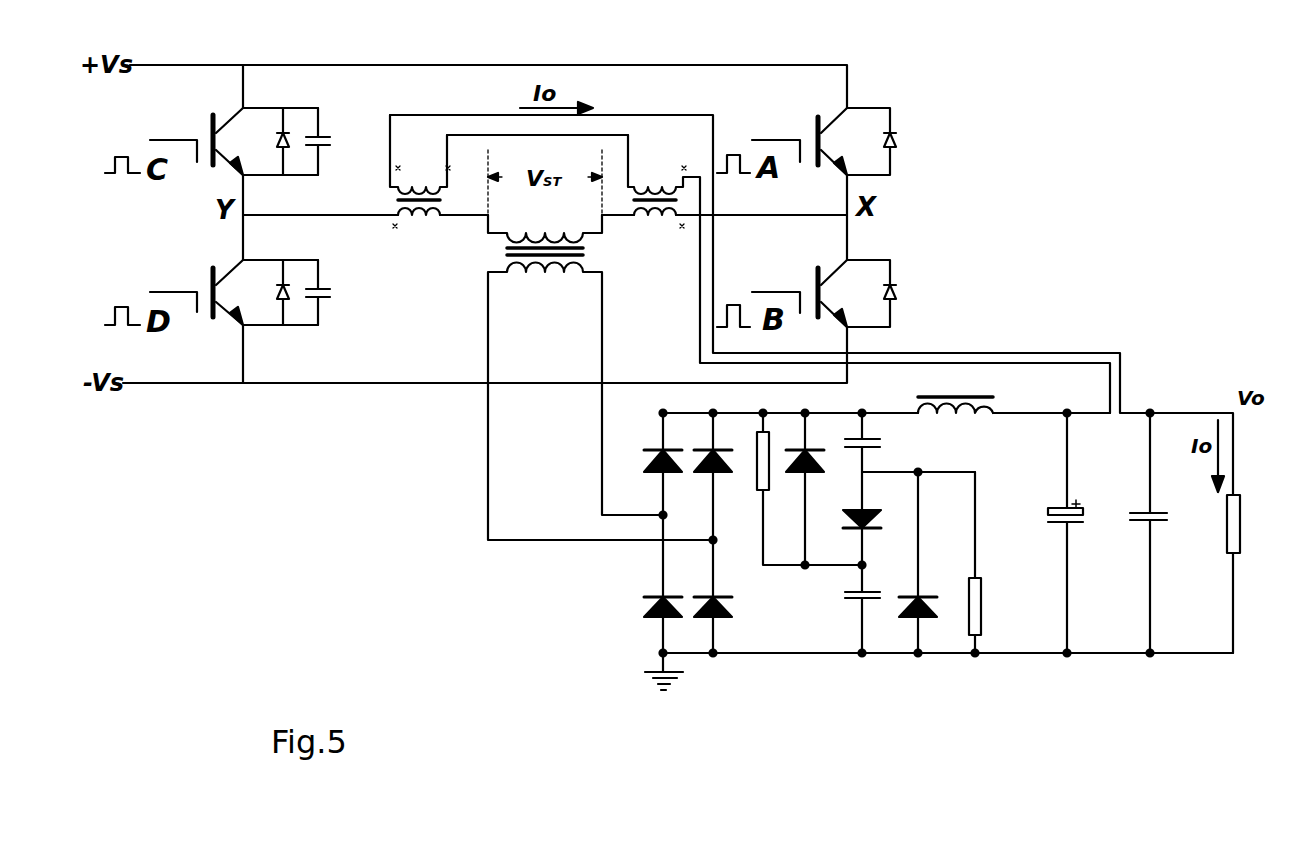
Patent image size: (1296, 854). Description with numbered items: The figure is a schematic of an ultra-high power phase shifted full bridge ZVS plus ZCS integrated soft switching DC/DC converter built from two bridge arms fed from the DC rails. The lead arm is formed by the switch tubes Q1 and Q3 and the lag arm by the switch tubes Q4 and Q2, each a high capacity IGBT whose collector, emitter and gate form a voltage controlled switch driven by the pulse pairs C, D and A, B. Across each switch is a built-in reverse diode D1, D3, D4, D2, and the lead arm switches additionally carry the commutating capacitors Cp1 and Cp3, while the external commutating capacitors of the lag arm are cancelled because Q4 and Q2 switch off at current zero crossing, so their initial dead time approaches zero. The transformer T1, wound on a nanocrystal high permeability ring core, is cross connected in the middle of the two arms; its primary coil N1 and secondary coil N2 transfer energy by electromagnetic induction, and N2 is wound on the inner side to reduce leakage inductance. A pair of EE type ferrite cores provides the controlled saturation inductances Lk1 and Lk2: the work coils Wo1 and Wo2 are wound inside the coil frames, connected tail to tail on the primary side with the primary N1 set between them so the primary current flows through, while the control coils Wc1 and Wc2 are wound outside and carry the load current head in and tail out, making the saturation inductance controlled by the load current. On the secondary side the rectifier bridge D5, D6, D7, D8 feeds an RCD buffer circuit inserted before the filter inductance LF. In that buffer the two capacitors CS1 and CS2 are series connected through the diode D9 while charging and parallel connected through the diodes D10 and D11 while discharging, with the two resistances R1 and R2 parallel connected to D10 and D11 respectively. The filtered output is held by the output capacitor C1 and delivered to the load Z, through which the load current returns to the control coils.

The switch tube on the lead arm Q1 is at (217, 135).
The switch tube on the lag arm Q2 is at (821, 287).
The switch tube on the lead arm Q3 is at (217, 286).
The switch tube on the lag arm Q4 is at (821, 135).
The built-in reverse diode D1 is at (280, 141).
The built-in reverse diode D2 is at (871, 293).
The built-in reverse diode D3 is at (280, 292).
The built-in reverse diode D4 is at (871, 141).
The commutating capacitor Cp1 is at (336, 141).
The commutating capacitor Cp3 is at (336, 292).
The controlled saturation inductance Lk1 is at (420, 192).
The controlled saturation inductance Lk2 is at (869, 274).
The control coil Wc1 is at (420, 154).
The control coil Wc2 is at (869, 274).
The work coil Wo1 is at (416, 221).
The work coil Wo2 is at (659, 221).
The transformer T1 is at (584, 373).
The primary coil N1 is at (545, 224).
The secondary coil N2 is at (600, 402).
The rectifier bridge diode D5 is at (654, 464).
The rectifier bridge diode D6 is at (655, 584).
The rectifier bridge diode D7 is at (721, 476).
The rectifier bridge diode D8 is at (720, 596).
The buffer circuit diode D9 is at (855, 518).
The buffer circuit diode D10 is at (819, 489).
The buffer circuit diode D11 is at (930, 562).
The buffer circuit resistance R1 is at (798, 489).
The buffer circuit resistance R2 is at (989, 562).
The buffer circuit capacitor CS1 is at (910, 442).
The buffer circuit capacitor CS2 is at (845, 609).
The filter inductance LF is at (969, 399).
The output filter capacitor C1 is at (1049, 533).
The load impedance Z is at (1243, 574).